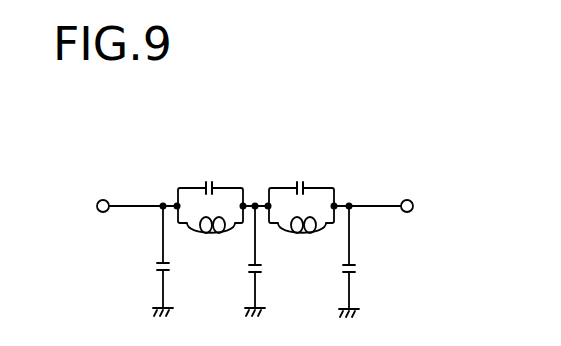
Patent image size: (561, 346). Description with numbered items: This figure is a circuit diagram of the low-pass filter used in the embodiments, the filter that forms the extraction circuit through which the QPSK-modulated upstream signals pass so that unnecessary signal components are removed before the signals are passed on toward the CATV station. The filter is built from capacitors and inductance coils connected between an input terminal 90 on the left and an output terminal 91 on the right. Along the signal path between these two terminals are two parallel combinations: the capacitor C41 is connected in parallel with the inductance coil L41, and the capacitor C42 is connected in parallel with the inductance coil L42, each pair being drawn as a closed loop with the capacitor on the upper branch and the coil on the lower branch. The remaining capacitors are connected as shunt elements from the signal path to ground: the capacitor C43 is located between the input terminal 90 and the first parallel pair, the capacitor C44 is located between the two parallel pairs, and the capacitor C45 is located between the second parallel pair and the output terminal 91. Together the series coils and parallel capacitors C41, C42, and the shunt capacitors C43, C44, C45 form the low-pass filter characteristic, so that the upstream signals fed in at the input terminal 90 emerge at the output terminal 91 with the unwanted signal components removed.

The input terminal 90 is at (100, 203).
The output terminal 91 is at (413, 201).
The capacitor C41 is at (210, 180).
The inductance coil L41 is at (210, 237).
The capacitor C42 is at (301, 180).
The inductance coil L42 is at (301, 237).
The capacitor C43 is at (146, 261).
The capacitor C44 is at (239, 261).
The capacitor C45 is at (368, 261).